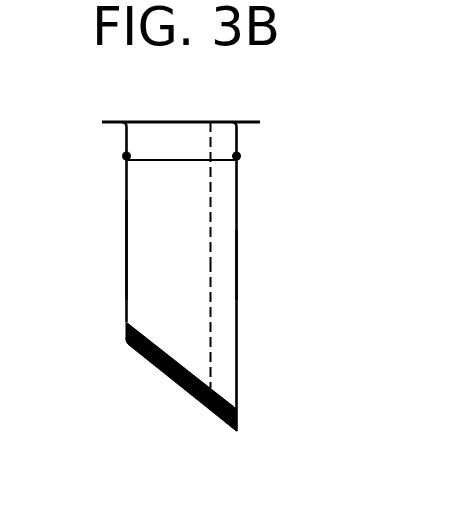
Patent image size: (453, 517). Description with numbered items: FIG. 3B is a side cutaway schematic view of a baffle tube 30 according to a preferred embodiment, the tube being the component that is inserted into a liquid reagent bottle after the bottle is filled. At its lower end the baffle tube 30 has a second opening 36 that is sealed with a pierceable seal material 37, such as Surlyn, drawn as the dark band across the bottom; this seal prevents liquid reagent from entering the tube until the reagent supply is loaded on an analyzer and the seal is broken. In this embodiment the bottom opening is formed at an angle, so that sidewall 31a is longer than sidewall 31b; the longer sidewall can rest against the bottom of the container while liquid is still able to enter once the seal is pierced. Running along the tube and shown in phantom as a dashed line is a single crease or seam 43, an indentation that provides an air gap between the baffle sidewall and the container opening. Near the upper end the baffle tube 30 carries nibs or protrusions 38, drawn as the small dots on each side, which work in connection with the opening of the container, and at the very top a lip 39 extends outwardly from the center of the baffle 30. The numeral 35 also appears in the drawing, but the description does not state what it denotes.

The baffle tube 30 is at (126, 287).
The sidewall 31a is at (237, 266).
The sidewall 31b is at (126, 218).
The central lumen axis 35 is at (212, 358).
The second opening 36 is at (198, 398).
The pierceable seal material 37 is at (168, 377).
The nibs or protrusions 38 is at (122, 156).
The lip 39 is at (258, 123).
The crease or seam 43 is at (213, 250).